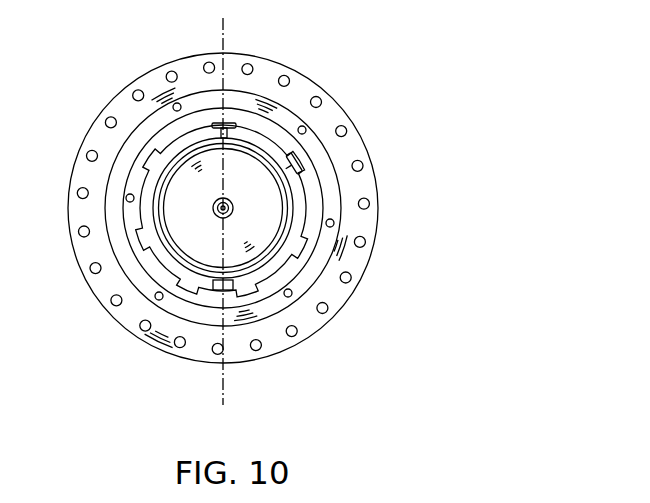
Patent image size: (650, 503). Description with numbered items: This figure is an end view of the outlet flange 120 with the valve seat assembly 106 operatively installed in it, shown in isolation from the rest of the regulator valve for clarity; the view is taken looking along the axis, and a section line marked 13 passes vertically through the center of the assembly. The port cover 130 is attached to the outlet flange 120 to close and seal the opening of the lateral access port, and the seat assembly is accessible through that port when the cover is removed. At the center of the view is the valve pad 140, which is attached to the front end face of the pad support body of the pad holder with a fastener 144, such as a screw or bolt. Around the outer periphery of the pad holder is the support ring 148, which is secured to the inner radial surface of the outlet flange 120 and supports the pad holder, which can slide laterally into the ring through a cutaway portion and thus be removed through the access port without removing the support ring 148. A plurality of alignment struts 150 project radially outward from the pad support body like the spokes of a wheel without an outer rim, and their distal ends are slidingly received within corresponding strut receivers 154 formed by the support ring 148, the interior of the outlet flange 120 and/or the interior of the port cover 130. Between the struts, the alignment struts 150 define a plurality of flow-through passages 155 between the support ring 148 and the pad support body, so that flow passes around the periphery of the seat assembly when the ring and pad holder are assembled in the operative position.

The section line 13- 13 is at (223, 25).
The valve seat assembly 106 is at (189, 219).
The outlet flange 120 is at (271, 56).
The port cover 130 is at (273, 130).
The valve pad 140 is at (266, 228).
The fastener 144 is at (228, 218).
The support ring 148 is at (300, 247).
The alignment struts 150 is at (150, 163).
The strut receivers 154 is at (158, 163).
The flow-through passages 155 is at (172, 133).